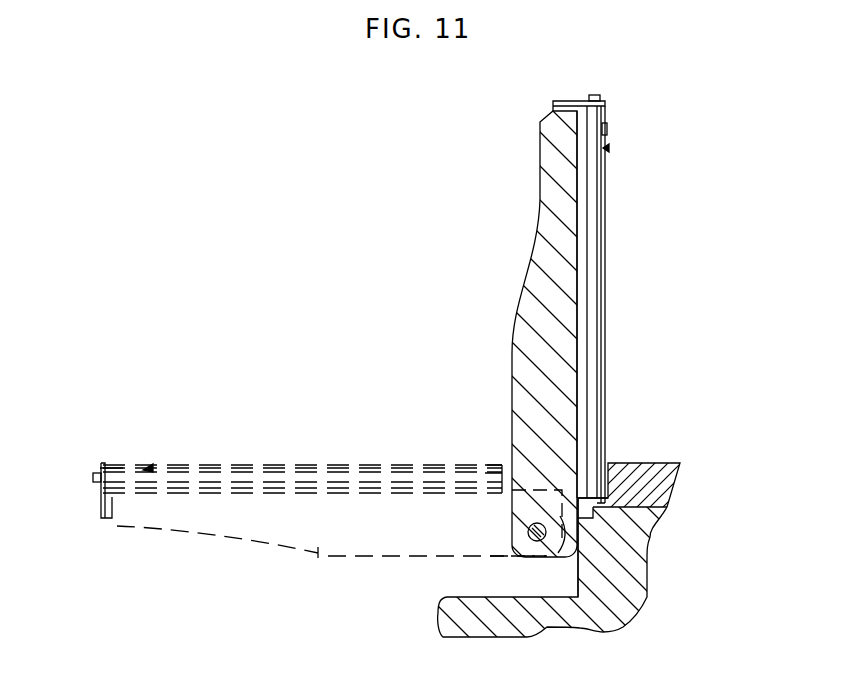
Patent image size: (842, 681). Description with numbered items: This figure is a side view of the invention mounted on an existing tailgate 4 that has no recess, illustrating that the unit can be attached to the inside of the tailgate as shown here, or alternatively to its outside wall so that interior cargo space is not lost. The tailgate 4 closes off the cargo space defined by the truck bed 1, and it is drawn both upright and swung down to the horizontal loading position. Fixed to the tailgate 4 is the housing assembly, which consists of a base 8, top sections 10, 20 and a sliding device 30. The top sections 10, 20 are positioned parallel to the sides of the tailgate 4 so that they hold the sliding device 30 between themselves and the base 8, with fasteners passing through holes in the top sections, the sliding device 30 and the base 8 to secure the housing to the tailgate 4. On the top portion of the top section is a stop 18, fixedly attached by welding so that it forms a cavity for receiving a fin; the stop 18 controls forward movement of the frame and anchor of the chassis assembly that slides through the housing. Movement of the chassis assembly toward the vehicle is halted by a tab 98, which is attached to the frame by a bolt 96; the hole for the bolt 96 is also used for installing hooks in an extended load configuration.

The truck bed 1 is at (645, 547).
The existing tailgate 4 is at (513, 352).
The base 8 is at (545, 174).
The top section 10 is at (603, 237).
The stop 18 is at (608, 148).
The top section 20 is at (338, 472).
The sliding device 30 is at (590, 192).
The bolt 96 is at (595, 93).
The tab 98 is at (580, 100).